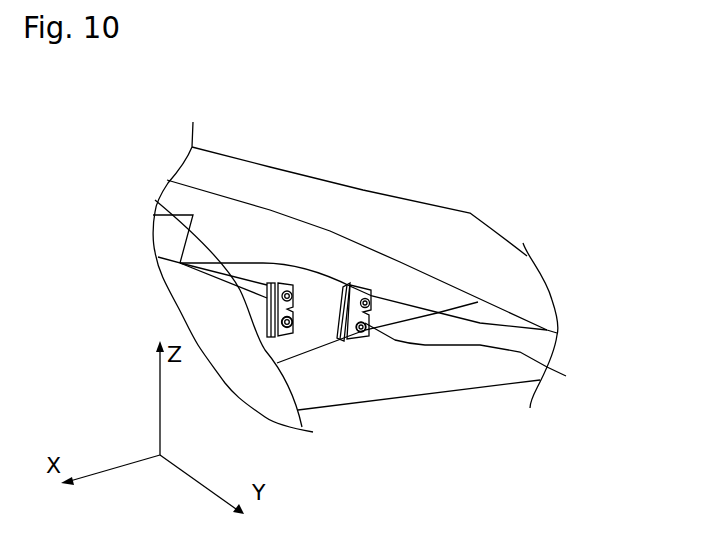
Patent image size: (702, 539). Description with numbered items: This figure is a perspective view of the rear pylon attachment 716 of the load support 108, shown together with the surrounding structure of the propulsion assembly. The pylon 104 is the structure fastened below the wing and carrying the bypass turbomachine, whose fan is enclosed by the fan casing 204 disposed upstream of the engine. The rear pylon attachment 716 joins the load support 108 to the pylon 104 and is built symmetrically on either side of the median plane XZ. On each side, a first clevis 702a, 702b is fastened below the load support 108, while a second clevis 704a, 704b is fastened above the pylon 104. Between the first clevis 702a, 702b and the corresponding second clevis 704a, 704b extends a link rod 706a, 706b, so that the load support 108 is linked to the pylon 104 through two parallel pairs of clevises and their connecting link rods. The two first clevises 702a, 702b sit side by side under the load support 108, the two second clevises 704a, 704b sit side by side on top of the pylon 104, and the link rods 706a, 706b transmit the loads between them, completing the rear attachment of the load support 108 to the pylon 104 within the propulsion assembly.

The rear pylon attachment 716 is at (368, 163).
The load support 108 is at (427, 235).
The pylon 104 is at (447, 367).
The fan casing 204 is at (187, 298).
The first clevis 702a is at (290, 282).
The first clevis 702b is at (372, 298).
The second clevis 704a is at (280, 337).
The second clevis 704b is at (360, 338).
The link rod 706a is at (153, 214).
The link rod 706b is at (566, 376).